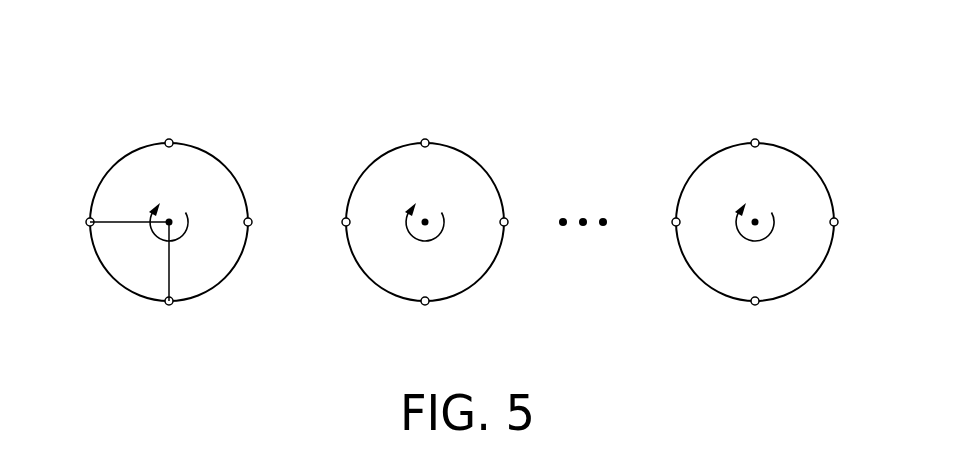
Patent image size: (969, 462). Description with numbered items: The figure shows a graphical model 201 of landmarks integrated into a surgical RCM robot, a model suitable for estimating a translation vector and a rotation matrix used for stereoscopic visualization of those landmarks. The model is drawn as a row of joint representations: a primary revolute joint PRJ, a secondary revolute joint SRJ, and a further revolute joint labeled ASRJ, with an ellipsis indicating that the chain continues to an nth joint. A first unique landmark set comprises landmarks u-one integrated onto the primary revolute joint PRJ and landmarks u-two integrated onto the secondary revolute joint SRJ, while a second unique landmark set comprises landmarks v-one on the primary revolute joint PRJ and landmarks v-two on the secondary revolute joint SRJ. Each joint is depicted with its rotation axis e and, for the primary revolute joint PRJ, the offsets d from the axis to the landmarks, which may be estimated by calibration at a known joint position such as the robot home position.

The graphical model 201 is at (772, 94).
The primary revolute joint PRJ is at (212, 290).
The secondary revolute joint SRJ is at (470, 290).
The axis-symmetric rotational joint node ASRJ is at (800, 290).